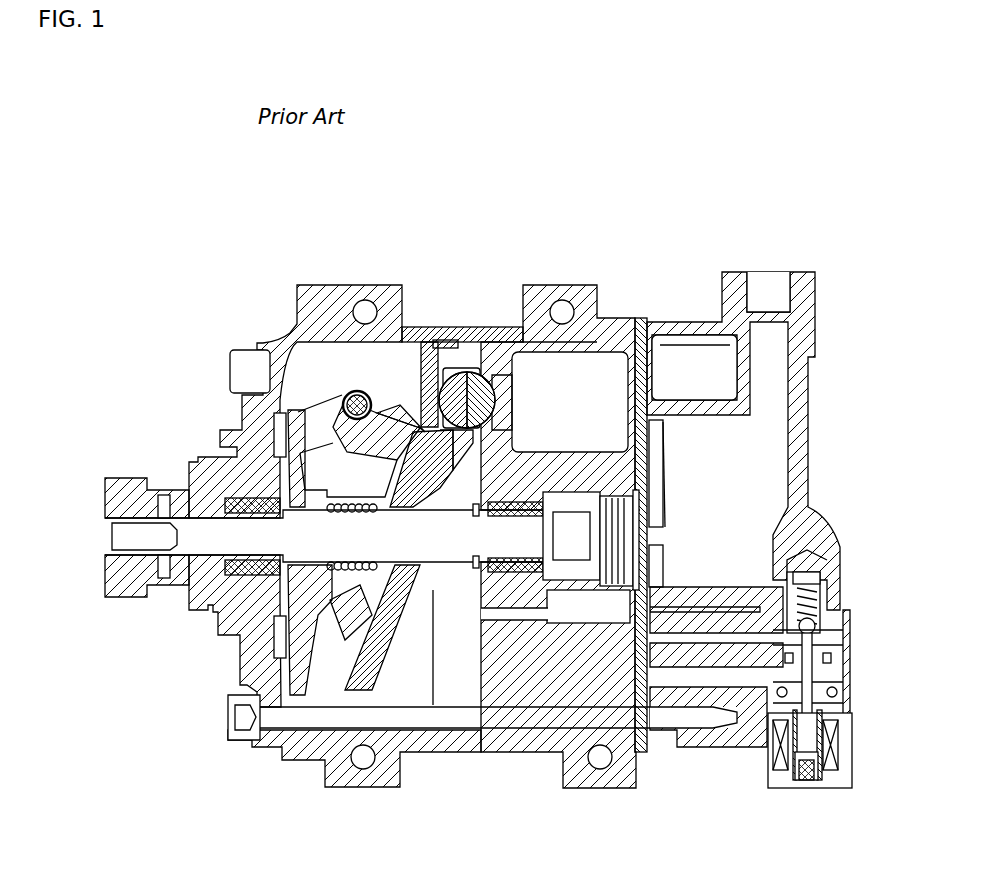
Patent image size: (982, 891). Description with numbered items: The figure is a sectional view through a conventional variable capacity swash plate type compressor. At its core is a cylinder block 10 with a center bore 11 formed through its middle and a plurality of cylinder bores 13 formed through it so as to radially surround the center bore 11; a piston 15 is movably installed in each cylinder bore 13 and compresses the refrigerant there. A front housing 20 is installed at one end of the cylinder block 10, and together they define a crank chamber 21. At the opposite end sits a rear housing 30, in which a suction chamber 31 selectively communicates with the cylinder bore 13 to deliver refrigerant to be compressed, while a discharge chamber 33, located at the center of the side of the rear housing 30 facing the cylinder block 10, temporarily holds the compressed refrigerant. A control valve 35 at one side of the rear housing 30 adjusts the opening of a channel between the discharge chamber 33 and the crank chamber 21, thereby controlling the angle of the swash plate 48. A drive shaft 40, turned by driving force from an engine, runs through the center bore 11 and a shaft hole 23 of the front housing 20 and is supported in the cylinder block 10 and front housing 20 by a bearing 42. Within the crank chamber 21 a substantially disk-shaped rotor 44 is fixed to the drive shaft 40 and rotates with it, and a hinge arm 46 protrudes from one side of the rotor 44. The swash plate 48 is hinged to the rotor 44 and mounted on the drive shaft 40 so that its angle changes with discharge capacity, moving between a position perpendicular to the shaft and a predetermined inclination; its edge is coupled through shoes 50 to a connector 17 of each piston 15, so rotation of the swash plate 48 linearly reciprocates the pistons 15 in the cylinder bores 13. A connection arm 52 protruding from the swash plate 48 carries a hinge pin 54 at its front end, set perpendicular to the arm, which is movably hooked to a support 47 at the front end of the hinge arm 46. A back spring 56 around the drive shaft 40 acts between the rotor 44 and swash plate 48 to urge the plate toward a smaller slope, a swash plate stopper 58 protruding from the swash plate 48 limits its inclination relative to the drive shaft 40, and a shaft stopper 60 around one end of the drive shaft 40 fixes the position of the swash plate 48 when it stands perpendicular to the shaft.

The cylinder block 10 is at (497, 742).
The center bore 11 is at (645, 502).
The cylinder bore 13 is at (562, 357).
The piston 15 is at (503, 383).
The connector 17 is at (447, 493).
The front housing 20 is at (392, 780).
The crank chamber 21 is at (392, 684).
The shaft hole 23 is at (236, 520).
The rear housing 30 is at (800, 425).
The suction chamber 31 is at (728, 466).
The discharge chamber 33 is at (683, 362).
The control valve 35 is at (826, 604).
The drive shaft 40 is at (205, 540).
The bearing 42 is at (210, 575).
The rotor 44 is at (282, 483).
The hinge arm 46 is at (318, 412).
The support 47 is at (383, 428).
The swash plate 48 is at (432, 400).
The shoe 50 is at (465, 375).
The connection arm 52 is at (410, 445).
The hinge pin 54 is at (354, 393).
The back spring 56 is at (352, 502).
The swash plate stopper 58 is at (335, 607).
The shaft stopper 60 is at (470, 590).